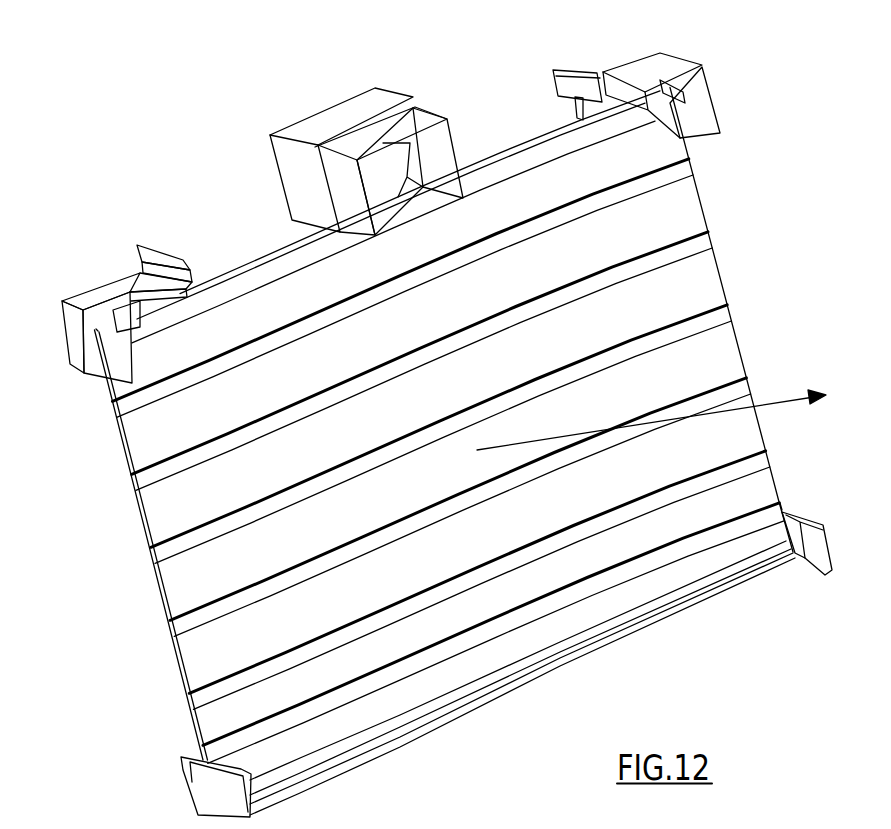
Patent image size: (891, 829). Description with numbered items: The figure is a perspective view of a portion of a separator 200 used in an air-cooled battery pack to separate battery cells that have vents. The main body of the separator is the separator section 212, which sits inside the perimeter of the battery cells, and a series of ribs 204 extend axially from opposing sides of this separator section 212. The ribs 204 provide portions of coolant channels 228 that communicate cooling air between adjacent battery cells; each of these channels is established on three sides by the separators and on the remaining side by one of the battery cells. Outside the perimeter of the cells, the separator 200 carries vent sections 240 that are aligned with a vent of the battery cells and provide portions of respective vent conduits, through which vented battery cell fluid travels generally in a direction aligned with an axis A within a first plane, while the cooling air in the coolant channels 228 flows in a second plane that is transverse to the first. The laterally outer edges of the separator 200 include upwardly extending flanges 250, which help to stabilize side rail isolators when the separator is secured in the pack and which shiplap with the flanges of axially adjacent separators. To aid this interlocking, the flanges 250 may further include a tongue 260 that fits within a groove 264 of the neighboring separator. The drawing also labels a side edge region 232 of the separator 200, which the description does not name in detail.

The separator 200 is at (776, 148).
The ribs 204 is at (683, 249).
The separator section 212 is at (181, 577).
The coolant channels 228 is at (187, 500).
The second side edge 232 is at (738, 438).
The vent sections 240 is at (290, 188).
The flanges 250 is at (553, 83).
The tongue 260 is at (137, 253).
The groove 264 is at (599, 76).
The axis A is at (731, 408).